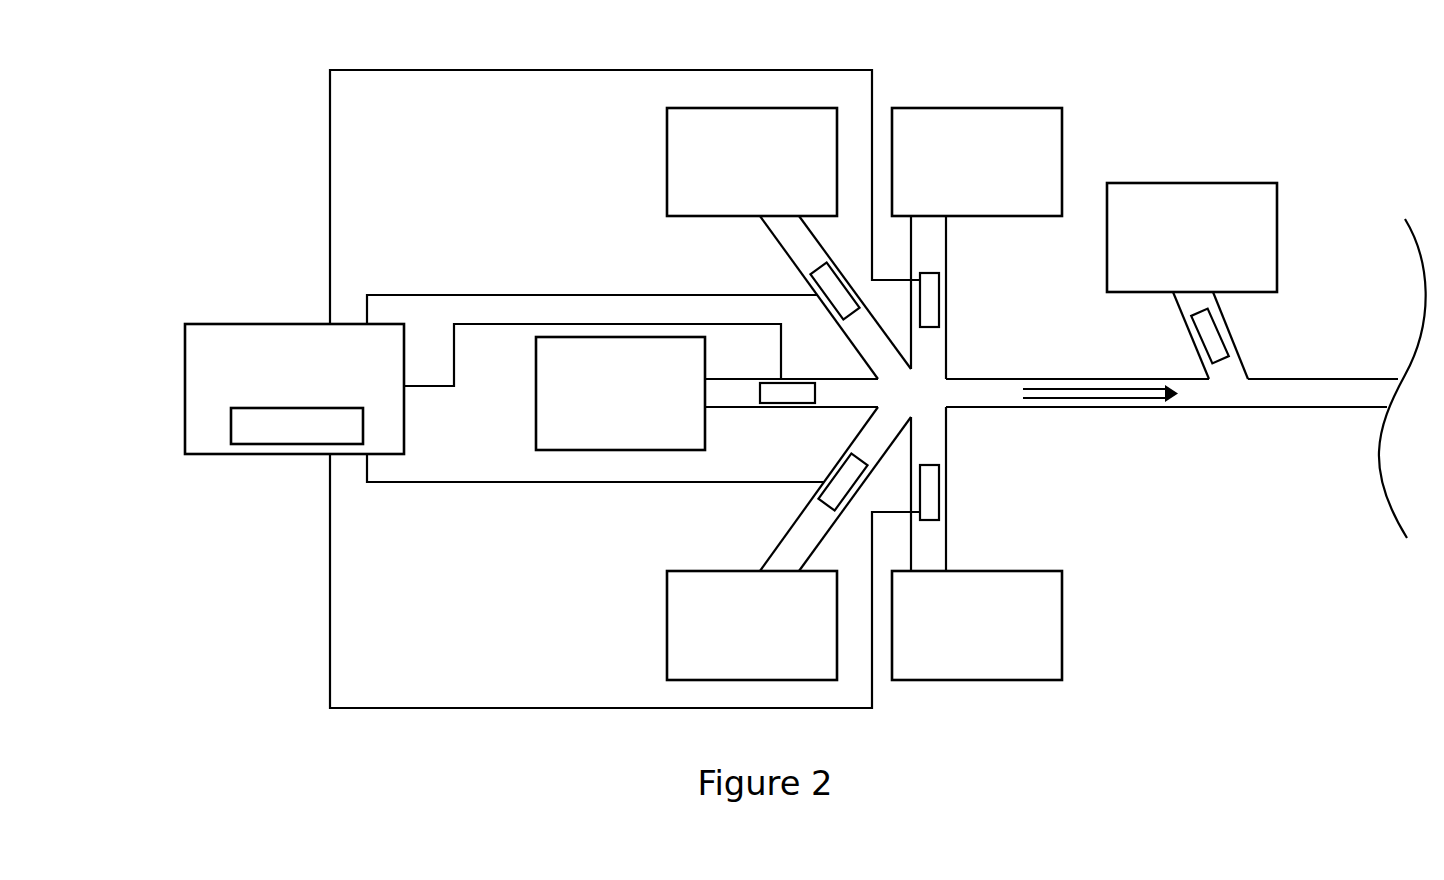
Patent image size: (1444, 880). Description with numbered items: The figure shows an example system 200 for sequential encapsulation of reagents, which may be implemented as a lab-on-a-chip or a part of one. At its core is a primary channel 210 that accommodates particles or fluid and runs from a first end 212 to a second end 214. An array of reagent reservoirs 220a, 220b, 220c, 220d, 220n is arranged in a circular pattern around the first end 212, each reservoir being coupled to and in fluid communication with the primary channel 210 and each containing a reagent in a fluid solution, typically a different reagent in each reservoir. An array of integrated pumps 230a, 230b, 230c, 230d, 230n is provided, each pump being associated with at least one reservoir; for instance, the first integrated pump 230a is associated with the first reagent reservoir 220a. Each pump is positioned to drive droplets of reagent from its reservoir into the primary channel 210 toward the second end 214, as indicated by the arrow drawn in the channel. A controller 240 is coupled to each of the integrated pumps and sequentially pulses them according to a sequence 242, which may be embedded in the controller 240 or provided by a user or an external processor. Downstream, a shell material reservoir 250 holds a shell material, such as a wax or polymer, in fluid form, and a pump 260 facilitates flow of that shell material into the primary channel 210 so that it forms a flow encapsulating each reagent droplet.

The example system 200 is at (1343, 154).
The primary channel 210 is at (1117, 408).
The first end 212 is at (985, 420).
The second end 214 is at (1364, 421).
The first reagent reservoir 220a is at (1048, 135).
The reagent reservoir 220b is at (824, 135).
The reagent reservoir 220c is at (697, 361).
The reagent reservoir 220d is at (824, 597).
The reagent reservoir 220n is at (1052, 597).
The first integrated pump 230a is at (940, 297).
The integrated pump 230b is at (821, 281).
The integrated pump 230c is at (801, 381).
The integrated pump 230d is at (820, 495).
The integrated pump 230n is at (933, 487).
The controller 240 is at (384, 351).
The sequence 242 is at (231, 424).
The shell material reservoir 250 is at (1264, 209).
The pump 260 is at (1217, 326).